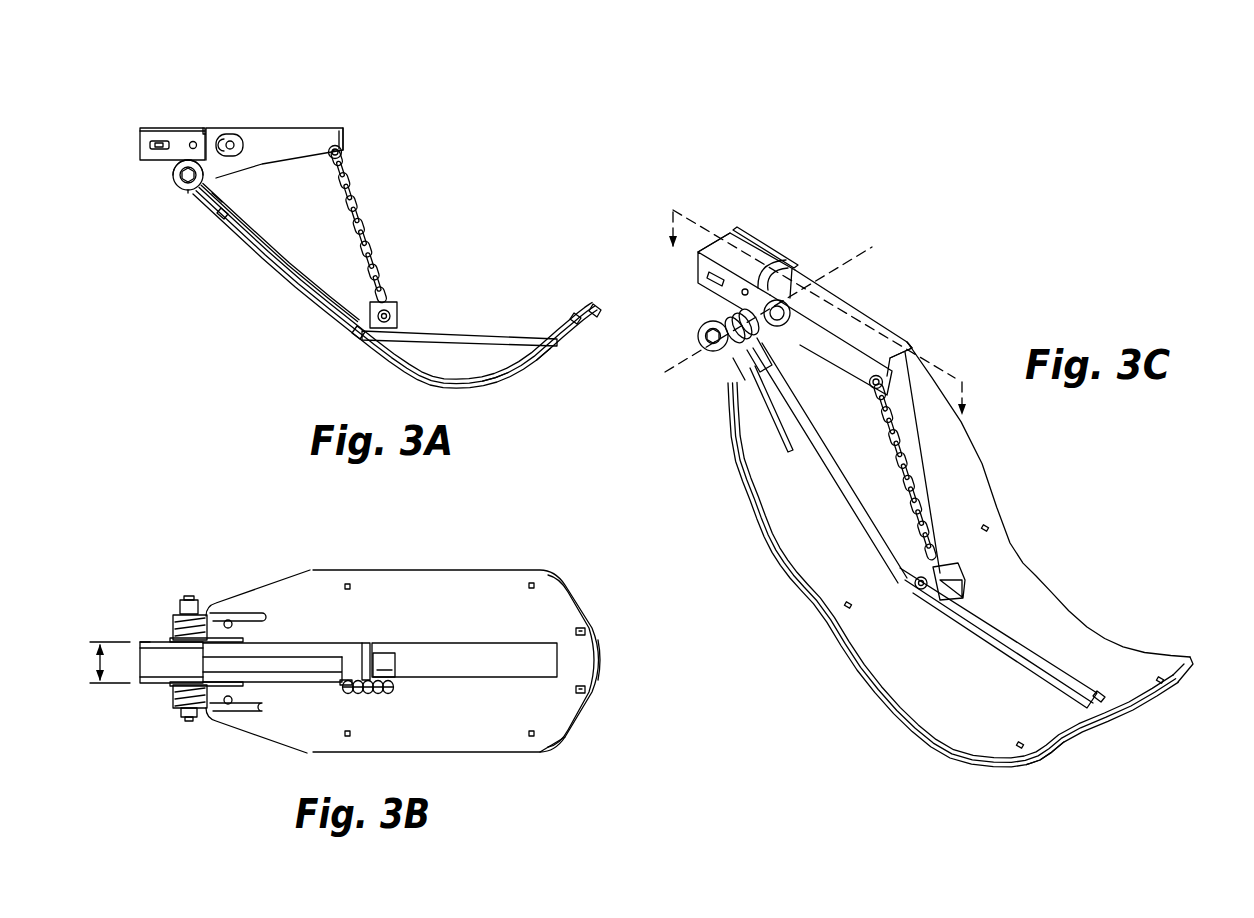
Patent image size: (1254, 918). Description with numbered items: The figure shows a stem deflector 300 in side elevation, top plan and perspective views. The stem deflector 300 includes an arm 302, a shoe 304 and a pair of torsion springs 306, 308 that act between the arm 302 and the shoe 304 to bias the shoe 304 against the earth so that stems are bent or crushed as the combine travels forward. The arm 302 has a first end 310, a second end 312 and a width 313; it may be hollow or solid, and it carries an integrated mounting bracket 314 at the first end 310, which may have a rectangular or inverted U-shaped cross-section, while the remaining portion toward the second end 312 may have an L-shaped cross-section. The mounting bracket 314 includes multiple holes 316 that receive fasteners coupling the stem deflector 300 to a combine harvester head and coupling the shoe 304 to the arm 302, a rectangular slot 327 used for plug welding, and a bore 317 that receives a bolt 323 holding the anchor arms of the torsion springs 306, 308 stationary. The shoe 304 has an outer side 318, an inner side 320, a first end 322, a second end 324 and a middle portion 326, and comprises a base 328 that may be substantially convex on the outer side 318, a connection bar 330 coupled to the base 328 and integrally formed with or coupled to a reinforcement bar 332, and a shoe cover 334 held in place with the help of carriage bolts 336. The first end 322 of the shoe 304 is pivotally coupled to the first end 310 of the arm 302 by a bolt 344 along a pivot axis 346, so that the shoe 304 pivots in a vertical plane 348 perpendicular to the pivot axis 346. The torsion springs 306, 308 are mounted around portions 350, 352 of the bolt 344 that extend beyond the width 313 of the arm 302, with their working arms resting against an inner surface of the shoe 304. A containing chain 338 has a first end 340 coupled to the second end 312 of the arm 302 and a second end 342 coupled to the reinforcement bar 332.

In FIG. 3A, the stem deflector 300 is at (108, 98).
In FIG. 3B, the stem deflector 300 is at (138, 565).
In FIG. 3C, the stem deflector 300 is at (1058, 260).
In FIG. 3A, the arm 302 is at (283, 108).
In FIG. 3B, the arm 302 is at (282, 648).
In FIG. 3C, the arm 302 is at (882, 290).
In FIG. 3A, the shoe 304 is at (525, 262).
In FIG. 3B, the shoe 304 is at (468, 560).
In FIG. 3C, the shoe 304 is at (1135, 530).
In FIG. 3B, the torsion spring 306 is at (173, 622).
In FIG. 3A, the torsion spring 308 is at (412, 227).
In FIG. 3B, the torsion spring 308 is at (176, 694).
In FIG. 3C, the torsion spring 308 is at (727, 367).
In FIG. 3A, the first end 310 is at (172, 128).
In FIG. 3B, the first end 310 is at (160, 672).
In FIG. 3C, the first end 310 is at (738, 240).
In FIG. 3A, the second end 312 is at (346, 125).
In FIG. 3B, the second end 312 is at (332, 670).
In FIG. 3C, the second end 312 is at (910, 340).
In FIG. 3B, the width 313 is at (100, 664).
In FIG. 3A, the mounting bracket 314 is at (165, 163).
In FIG. 3B, the mounting bracket 314 is at (152, 637).
In FIG. 3C, the mounting bracket 314 is at (722, 228).
In FIG. 3A, the holes 316 is at (193, 140).
In FIG. 3C, the holes 316 is at (741, 294).
In FIG. 3A, the bore 317 is at (224, 138).
In FIG. 3A, the outer side 318 is at (560, 372).
In FIG. 3C, the outer side 318 is at (1081, 750).
In FIG. 3A, the inner side 320 is at (470, 298).
In FIG. 3B, the inner side 320 is at (425, 607).
In FIG. 3C, the inner side 320 is at (1062, 536).
In FIG. 3A, the first end 322 is at (208, 201).
In FIG. 3C, the first end 322 is at (751, 359).
In FIG. 3C, the bolt 323 is at (795, 348).
In FIG. 3A, the second end 324 is at (603, 304).
In FIG. 3B, the second end 324 is at (606, 660).
In FIG. 3C, the second end 324 is at (1198, 655).
In FIG. 3A, the middle portion 326 is at (398, 380).
In FIG. 3B, the middle portion 326 is at (420, 763).
In FIG. 3C, the middle portion 326 is at (953, 575).
In FIG. 3A, the rectangular slot 327 is at (148, 147).
In FIG. 3A, the base 328 is at (486, 380).
In FIG. 3B, the base 328 is at (540, 710).
In FIG. 3C, the base 328 is at (900, 665).
In FIG. 3A, the connection bar 330 is at (318, 270).
In FIG. 3B, the connection bar 330 is at (323, 651).
In FIG. 3C, the connection bar 330 is at (858, 468).
In FIG. 3A, the reinforcement bar 332 is at (502, 332).
In FIG. 3B, the reinforcement bar 332 is at (498, 650).
In FIG. 3C, the reinforcement bar 332 is at (1020, 639).
In FIG. 3A, the shoe cover 334 is at (506, 390).
In FIG. 3B, the shoe cover 334 is at (571, 661).
In FIG. 3C, the shoe cover 334 is at (1150, 687).
In FIG. 3A, the carriage bolts 336 is at (224, 220).
In FIG. 3B, the carriage bolts 336 is at (586, 632).
In FIG. 3C, the carriage bolts 336 is at (1118, 708).
In FIG. 3A, the containing chain 338 is at (362, 216).
In FIG. 3B, the containing chain 338 is at (361, 694).
In FIG. 3C, the containing chain 338 is at (906, 492).
In FIG. 3A, the first end 340 is at (342, 152).
In FIG. 3B, the first end 340 is at (345, 692).
In FIG. 3C, the first end 340 is at (884, 383).
In FIG. 3A, the second end 342 is at (400, 316).
In FIG. 3B, the second end 342 is at (385, 694).
In FIG. 3C, the second end 342 is at (966, 577).
In FIG. 3A, the bolt 344 is at (182, 186).
In FIG. 3B, the bolt 344 is at (190, 720).
In FIG. 3C, the bolt 344 is at (705, 338).
In FIG. 3C, the pivot axis 346 is at (843, 262).
In FIG. 3C, the plane 348 is at (958, 379).
In FIG. 3B, the portion 350 is at (205, 608).
In FIG. 3B, the portion 352 is at (201, 723).